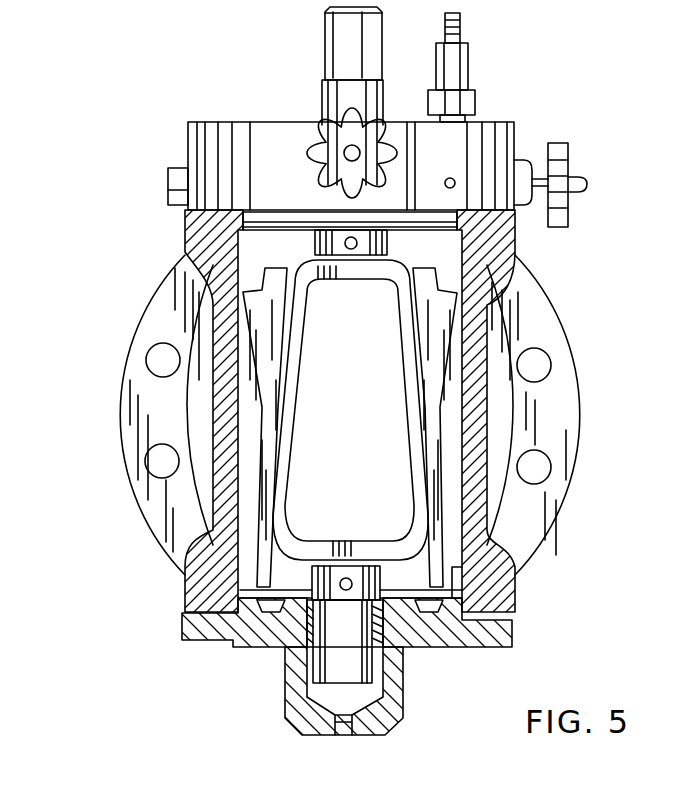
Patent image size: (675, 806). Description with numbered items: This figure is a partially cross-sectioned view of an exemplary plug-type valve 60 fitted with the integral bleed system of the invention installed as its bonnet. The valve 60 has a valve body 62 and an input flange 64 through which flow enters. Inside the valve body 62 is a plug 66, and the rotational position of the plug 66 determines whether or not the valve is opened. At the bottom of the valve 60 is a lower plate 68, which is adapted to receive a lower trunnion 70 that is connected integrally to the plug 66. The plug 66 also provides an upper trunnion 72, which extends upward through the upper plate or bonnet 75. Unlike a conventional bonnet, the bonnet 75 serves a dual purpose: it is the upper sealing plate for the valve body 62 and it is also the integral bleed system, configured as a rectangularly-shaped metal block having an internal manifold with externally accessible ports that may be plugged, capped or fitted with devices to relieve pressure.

The valve 60 is at (124, 477).
The valve body 62 is at (214, 276).
The input flange 64 is at (124, 386).
The plug 66 is at (437, 335).
The lower plate 68 is at (200, 622).
The lower trunnion 70 is at (340, 668).
The upper trunnion 72 is at (343, 40).
The bonnet 75 is at (212, 122).